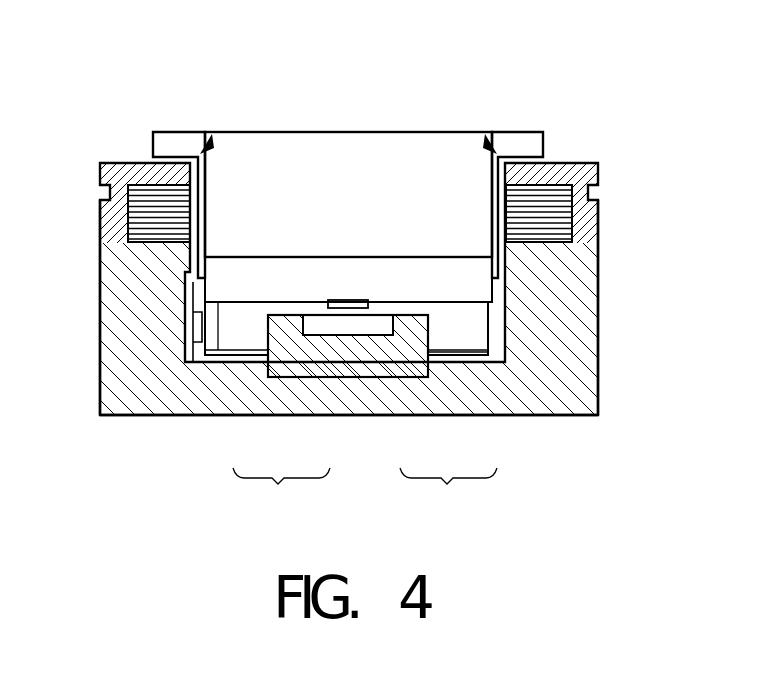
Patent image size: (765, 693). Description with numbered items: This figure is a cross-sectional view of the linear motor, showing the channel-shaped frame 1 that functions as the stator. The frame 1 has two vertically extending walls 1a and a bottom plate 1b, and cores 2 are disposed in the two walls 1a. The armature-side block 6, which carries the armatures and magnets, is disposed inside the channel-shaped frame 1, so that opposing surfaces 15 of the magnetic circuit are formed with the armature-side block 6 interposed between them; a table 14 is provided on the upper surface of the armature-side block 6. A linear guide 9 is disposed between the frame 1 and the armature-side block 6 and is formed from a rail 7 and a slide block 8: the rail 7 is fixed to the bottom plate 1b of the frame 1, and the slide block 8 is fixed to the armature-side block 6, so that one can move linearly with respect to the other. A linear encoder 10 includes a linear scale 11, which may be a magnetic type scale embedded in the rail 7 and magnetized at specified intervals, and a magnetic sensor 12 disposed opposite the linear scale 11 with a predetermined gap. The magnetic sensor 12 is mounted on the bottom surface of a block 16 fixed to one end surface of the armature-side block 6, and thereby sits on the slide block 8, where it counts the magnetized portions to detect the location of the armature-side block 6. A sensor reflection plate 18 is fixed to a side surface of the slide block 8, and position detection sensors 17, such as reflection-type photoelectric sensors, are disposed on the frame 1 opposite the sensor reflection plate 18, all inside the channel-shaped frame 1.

The frame 1 is at (553, 397).
The walls 1a is at (120, 278).
The bottom plate 1b is at (130, 382).
The cores 2 is at (148, 193).
The armature-side block 6 is at (518, 140).
The rail 7 is at (407, 357).
The slide block 8 is at (447, 338).
The linear guide 9 is at (448, 495).
The linear encoder 10 is at (281, 495).
The linear scale 11 is at (310, 330).
The magnetic sensor 12 is at (347, 307).
The table 14 is at (178, 140).
The opposing surfaces 15 is at (205, 146).
The block 16 is at (348, 145).
The position detection sensors 17 is at (197, 328).
The sensor reflection plate 18 is at (213, 348).